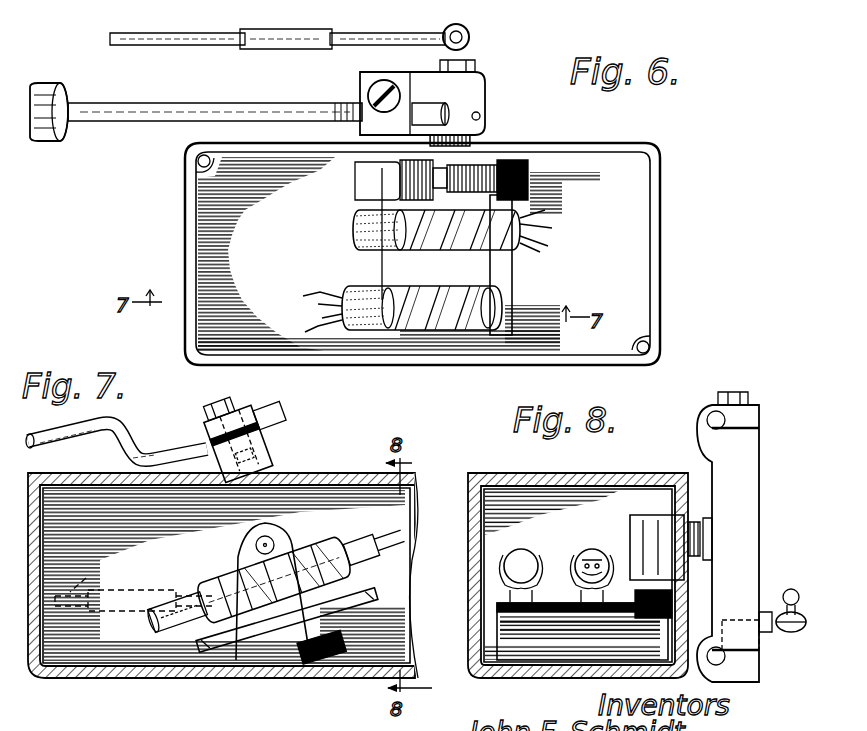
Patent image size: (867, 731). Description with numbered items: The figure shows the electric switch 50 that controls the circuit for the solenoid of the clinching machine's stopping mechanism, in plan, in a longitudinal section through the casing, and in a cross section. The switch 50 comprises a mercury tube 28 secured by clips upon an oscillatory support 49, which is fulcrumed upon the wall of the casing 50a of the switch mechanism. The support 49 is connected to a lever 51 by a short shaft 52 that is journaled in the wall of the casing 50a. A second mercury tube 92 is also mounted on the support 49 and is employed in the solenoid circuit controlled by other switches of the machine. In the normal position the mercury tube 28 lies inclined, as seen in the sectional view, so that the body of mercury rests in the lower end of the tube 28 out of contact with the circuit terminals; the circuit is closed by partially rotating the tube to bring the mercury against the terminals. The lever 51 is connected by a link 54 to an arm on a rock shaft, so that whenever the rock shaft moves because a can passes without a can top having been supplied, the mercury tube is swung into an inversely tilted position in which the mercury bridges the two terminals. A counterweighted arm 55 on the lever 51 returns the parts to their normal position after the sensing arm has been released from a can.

In FIG. 6, the mercury tube 28 is at (353, 236).
In FIG. 7, the mercury tube 28 is at (348, 552).
In FIG. 8, the mercury tube 28 is at (593, 549).
In FIG. 6, the oscillatory support 49 is at (512, 274).
In FIG. 7, the oscillatory support 49 is at (250, 668).
In FIG. 8, the oscillatory support 49 is at (590, 642).
In FIG. 6, the electric switch 50 is at (664, 211).
In FIG. 7, the electric switch 50 is at (142, 682).
In FIG. 8, the electric switch 50 is at (471, 474).
In FIG. 6, the casing 50a is at (662, 254).
In FIG. 7, the casing 50a is at (183, 681).
In FIG. 8, the casing 50a is at (500, 680).
In FIG. 6, the lever 51 is at (487, 98).
In FIG. 7, the lever 51 is at (272, 463).
In FIG. 8, the lever 51 is at (761, 502).
In FIG. 6, the short shaft 52 is at (466, 158).
In FIG. 7, the short shaft 52 is at (282, 538).
In FIG. 8, the short shaft 52 is at (684, 520).
In FIG. 6, the link 54 is at (400, 25).
In FIG. 7, the link 54 is at (135, 585).
In FIG. 8, the link 54 is at (790, 589).
In FIG. 6, the counterweighted arm 55 is at (176, 106).
In FIG. 7, the counterweighted arm 55 is at (128, 440).
In FIG. 6, the mercury tube 92 is at (470, 332).
In FIG. 7, the mercury tube 92 is at (214, 588).
In FIG. 8, the mercury tube 92 is at (524, 549).